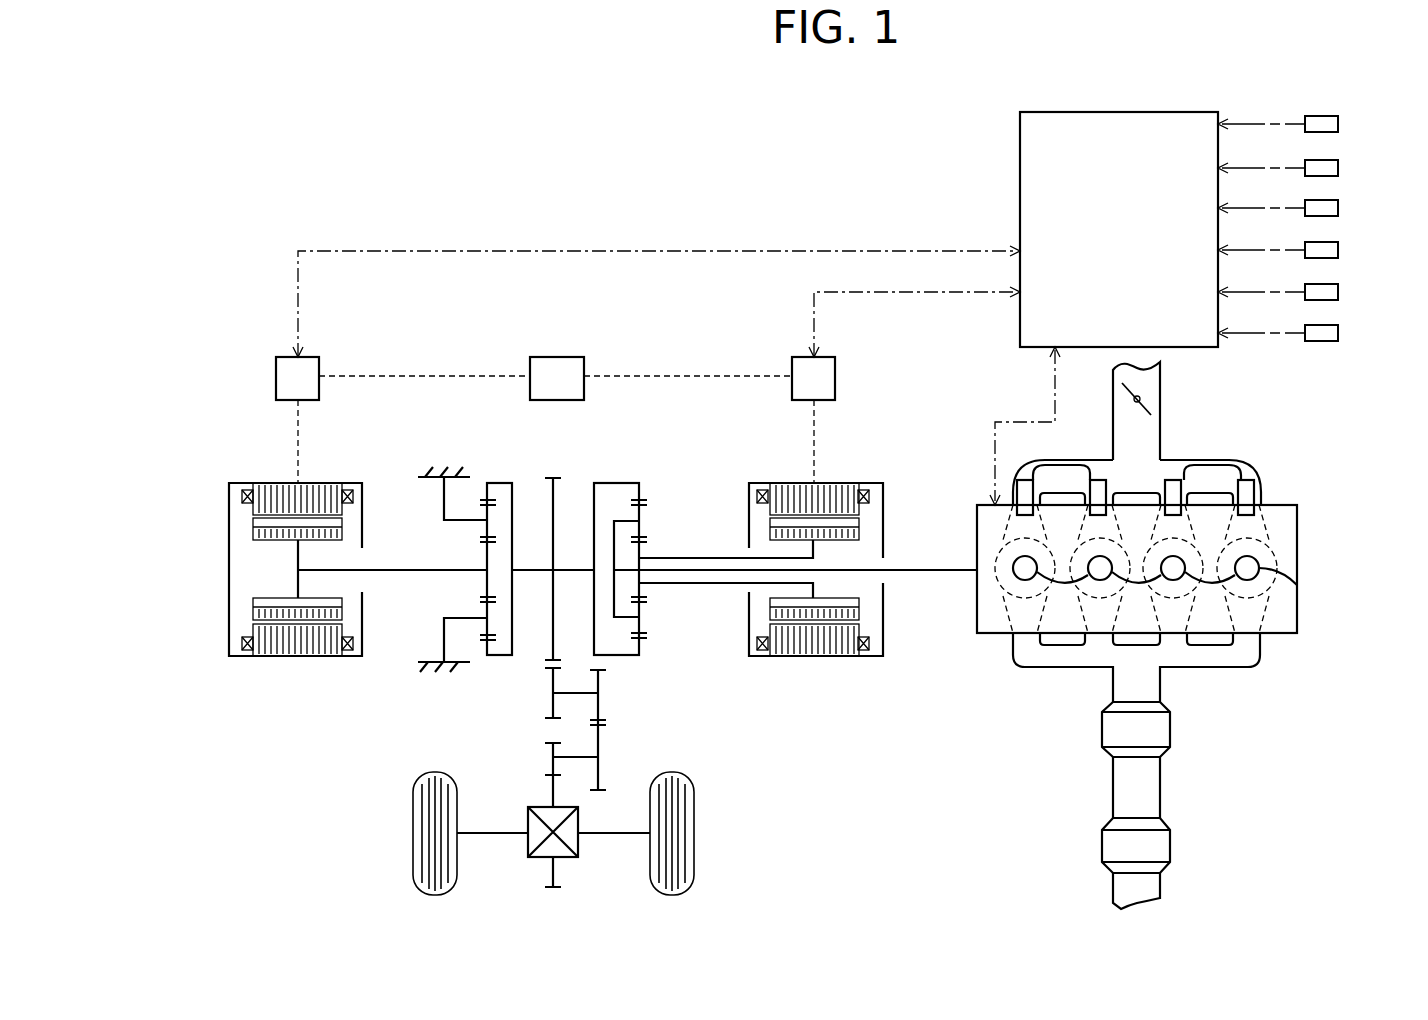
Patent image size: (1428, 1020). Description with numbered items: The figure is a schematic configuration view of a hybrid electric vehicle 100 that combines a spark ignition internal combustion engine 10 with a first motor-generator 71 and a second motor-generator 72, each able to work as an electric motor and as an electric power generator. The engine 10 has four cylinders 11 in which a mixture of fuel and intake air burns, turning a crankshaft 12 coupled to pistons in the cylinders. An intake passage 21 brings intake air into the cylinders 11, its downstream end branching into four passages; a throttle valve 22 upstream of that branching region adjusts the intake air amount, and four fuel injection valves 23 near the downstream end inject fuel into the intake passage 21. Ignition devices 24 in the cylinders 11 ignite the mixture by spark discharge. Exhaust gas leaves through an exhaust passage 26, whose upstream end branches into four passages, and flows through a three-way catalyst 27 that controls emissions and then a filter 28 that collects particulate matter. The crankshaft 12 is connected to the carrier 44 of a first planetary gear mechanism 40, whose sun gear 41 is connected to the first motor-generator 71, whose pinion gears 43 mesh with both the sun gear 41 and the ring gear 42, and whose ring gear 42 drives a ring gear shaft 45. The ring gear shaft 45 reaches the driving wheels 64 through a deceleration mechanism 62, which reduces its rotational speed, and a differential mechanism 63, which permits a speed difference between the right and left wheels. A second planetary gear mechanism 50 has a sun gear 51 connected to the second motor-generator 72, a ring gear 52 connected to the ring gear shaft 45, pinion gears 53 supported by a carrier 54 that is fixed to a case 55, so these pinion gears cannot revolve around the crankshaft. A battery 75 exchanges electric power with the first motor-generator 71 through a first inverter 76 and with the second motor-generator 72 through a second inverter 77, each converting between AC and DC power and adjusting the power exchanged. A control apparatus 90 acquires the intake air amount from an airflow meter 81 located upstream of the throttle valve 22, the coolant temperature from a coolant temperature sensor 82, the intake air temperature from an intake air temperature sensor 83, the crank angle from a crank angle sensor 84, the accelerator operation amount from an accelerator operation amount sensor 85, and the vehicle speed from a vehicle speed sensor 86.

The vehicle 100 is at (311, 147).
The internal combustion engine 10 is at (1135, 628).
The cylinders 11 is at (1136, 569).
The crankshaft 12 is at (946, 568).
The intake passage 21 is at (1114, 393).
The throttle valve 22 is at (1159, 409).
The fuel injection valves 23 is at (1098, 480).
The ignition devices 24 is at (1013, 570).
The exhaust passage 26 is at (1113, 784).
The three-way catalyst 27 is at (1102, 727).
The filter 28 is at (1102, 846).
The first planetary gear mechanism 40 is at (623, 530).
The sun gear 41 is at (640, 553).
The ring gear 42 is at (640, 498).
The pinion gears 43 is at (640, 612).
The carrier 44 is at (628, 618).
The ring gear shaft 45 is at (575, 568).
The second planetary gear mechanism 50 is at (441, 559).
The sun gear 51 is at (485, 555).
The ring gear 52 is at (483, 491).
The pinion gears 53 is at (482, 650).
The carrier 54 is at (453, 618).
The case 55 is at (426, 662).
The deceleration mechanism 62 is at (631, 712).
The differential mechanism 63 is at (536, 857).
The driving wheels 64 is at (413, 845).
The first motor-generator 71 is at (868, 483).
The second motor-generator 72 is at (229, 577).
The battery 75 is at (584, 371).
The first inverter 76 is at (792, 396).
The second inverter 77 is at (276, 386).
The airflow meter 81 is at (1340, 124).
The coolant temperature sensor 82 is at (1340, 168).
The intake air temperature sensor 83 is at (1340, 208).
The crank angle sensor 84 is at (1340, 250).
The accelerator operation amount sensor 85 is at (1340, 292).
The vehicle speed sensor 86 is at (1340, 333).
The control apparatus 90 is at (1145, 112).